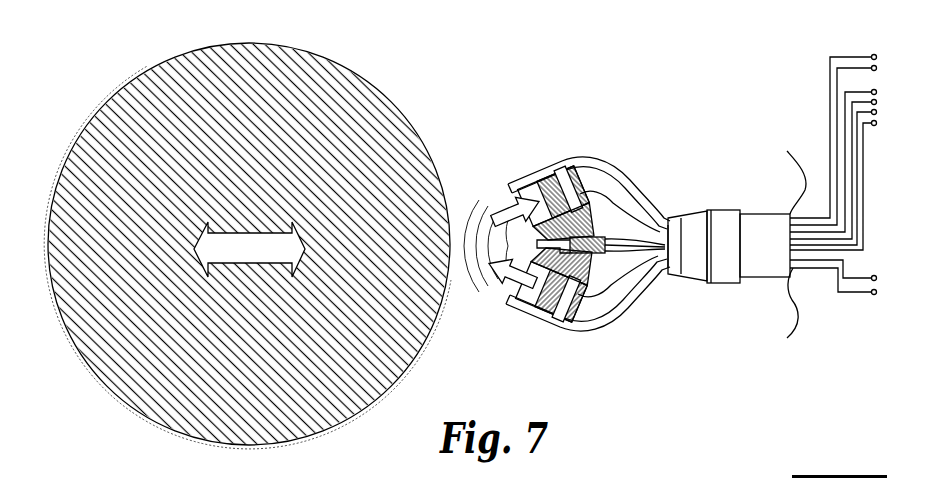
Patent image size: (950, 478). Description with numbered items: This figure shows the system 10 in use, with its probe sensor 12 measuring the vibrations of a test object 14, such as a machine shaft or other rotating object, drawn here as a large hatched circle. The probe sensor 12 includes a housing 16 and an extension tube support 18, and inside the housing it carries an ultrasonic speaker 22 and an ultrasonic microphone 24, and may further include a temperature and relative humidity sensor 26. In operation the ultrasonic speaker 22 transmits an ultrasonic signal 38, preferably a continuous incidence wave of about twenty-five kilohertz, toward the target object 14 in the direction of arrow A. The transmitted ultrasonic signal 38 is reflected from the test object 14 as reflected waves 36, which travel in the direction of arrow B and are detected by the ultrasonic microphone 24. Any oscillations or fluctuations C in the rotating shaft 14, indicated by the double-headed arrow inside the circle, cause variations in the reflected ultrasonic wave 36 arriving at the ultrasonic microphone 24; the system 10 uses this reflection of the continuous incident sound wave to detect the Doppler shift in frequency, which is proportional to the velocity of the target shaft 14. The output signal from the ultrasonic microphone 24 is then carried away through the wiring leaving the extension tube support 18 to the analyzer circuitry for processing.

The system 10 is at (703, 122).
The probe sensor 12 is at (628, 184).
The test object 14 is at (108, 100).
The housing 16 is at (596, 327).
The extension tube support 18 is at (766, 213).
The ultrasonic speaker 22 is at (545, 315).
The ultrasonic microphone 24 is at (550, 188).
The temperature and relative humidity sensor 26 is at (600, 233).
The reflected waves 36 is at (475, 210).
The ultrasonic signal 38 is at (476, 284).
The direction of transmitted signal A is at (506, 290).
The direction of reflected waves B is at (502, 207).
The oscillations or fluctuations C is at (256, 258).